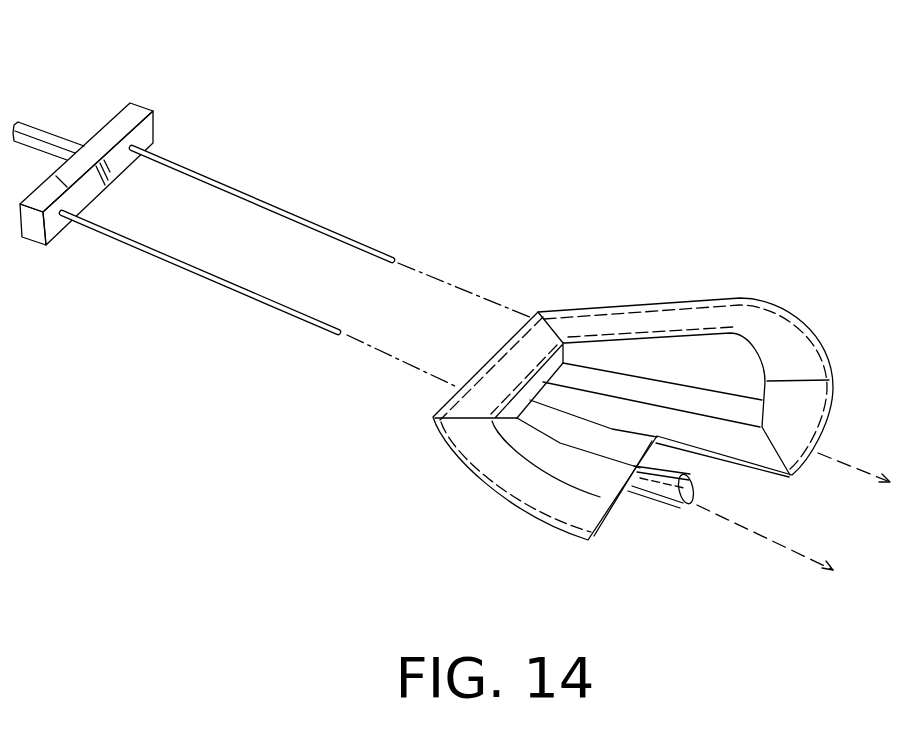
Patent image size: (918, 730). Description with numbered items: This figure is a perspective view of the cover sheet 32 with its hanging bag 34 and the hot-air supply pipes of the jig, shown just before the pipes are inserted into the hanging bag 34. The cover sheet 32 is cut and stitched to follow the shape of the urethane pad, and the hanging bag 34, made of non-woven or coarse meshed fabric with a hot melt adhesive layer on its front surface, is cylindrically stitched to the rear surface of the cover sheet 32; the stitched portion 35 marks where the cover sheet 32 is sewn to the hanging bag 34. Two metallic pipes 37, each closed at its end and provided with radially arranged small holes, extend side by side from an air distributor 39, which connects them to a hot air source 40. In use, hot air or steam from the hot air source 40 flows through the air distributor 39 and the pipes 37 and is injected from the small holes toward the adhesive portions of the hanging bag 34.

The cover sheet 32 is at (673, 315).
The hanging bag 34 is at (686, 512).
The stitched portion 35 is at (635, 493).
The metallic pipe 37 is at (280, 212).
The air distributor 39 is at (133, 113).
The hot air source 40 is at (53, 137).